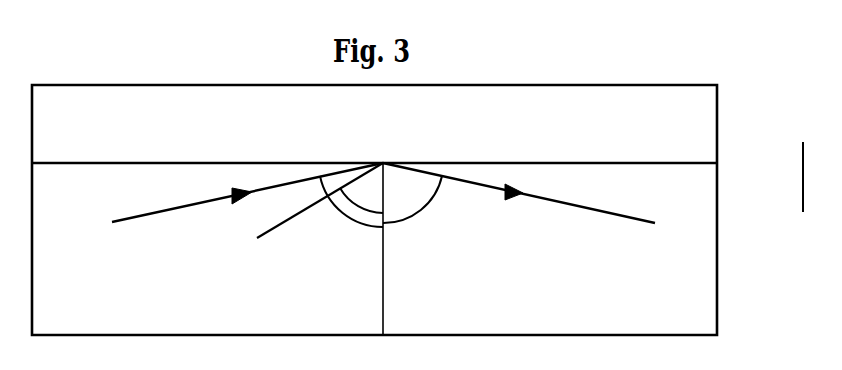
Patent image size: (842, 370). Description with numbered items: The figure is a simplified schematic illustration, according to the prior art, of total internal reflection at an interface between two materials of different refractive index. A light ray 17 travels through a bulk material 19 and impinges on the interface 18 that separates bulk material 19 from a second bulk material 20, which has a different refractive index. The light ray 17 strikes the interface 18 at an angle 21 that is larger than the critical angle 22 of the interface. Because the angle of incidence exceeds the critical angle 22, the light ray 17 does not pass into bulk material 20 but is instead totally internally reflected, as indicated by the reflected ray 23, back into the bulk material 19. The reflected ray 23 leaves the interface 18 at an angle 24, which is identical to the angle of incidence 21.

The light ray 17 is at (163, 210).
The interface 18 is at (230, 162).
The bulk material 19 is at (717, 180).
The bulk material 20 is at (717, 112).
The angle 21 is at (332, 204).
The critical angle 22 is at (357, 203).
The totally internally reflected light ray 23 is at (542, 203).
The angle 24 is at (427, 208).